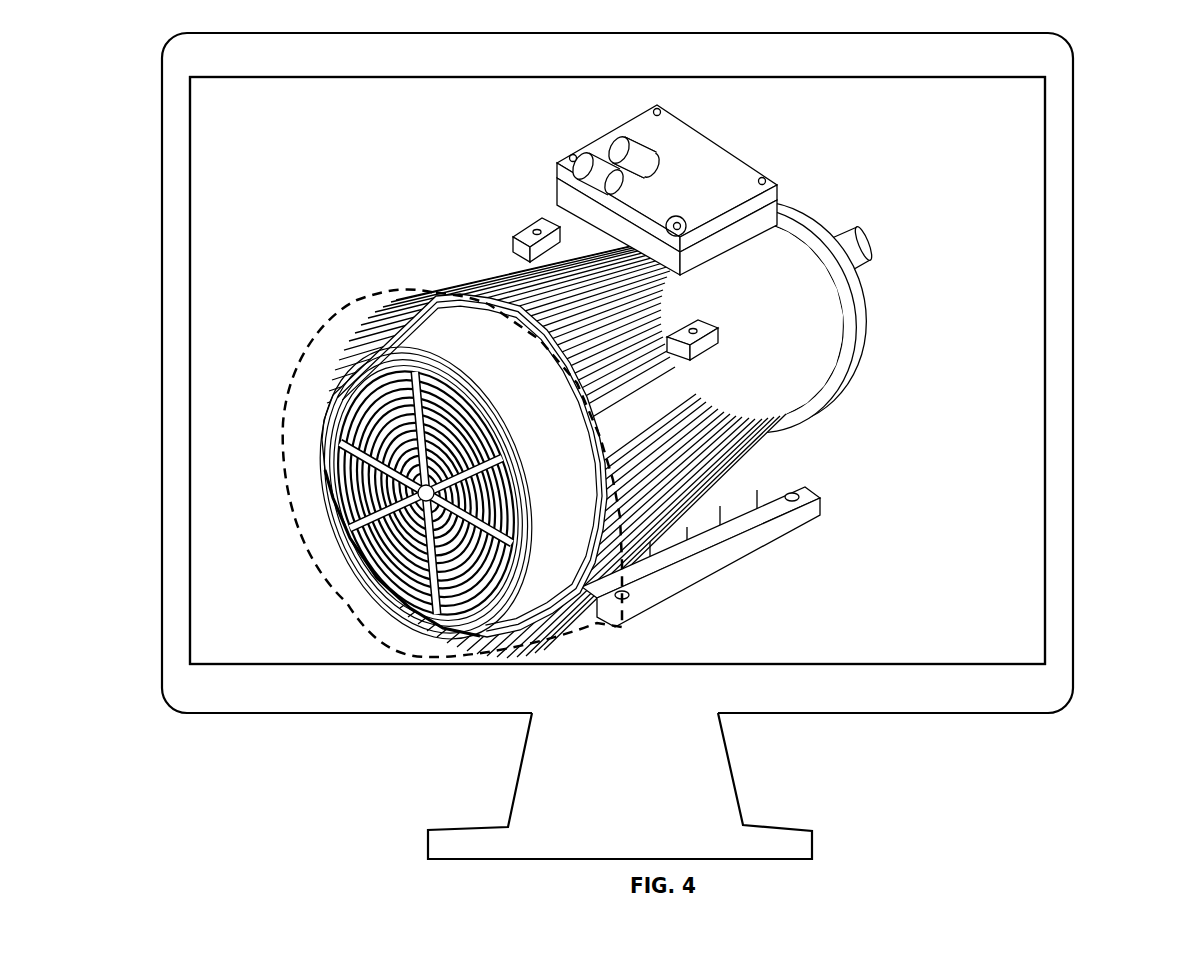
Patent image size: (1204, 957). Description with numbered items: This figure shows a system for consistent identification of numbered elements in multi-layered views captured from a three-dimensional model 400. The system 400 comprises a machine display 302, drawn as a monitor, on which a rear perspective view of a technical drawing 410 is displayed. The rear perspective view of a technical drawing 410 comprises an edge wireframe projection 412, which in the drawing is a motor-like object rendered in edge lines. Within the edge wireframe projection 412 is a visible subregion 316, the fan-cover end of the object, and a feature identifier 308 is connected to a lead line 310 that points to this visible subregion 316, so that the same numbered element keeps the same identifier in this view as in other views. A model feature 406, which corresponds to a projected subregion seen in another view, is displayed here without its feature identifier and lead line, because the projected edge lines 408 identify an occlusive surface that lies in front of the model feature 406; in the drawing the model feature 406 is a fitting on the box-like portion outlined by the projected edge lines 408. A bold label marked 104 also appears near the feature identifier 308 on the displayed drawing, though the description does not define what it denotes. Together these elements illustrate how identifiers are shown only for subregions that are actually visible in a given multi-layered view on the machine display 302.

The electric motor 104 is at (626, 385).
The machine display 302 is at (1074, 371).
The feature identifier 308 is at (603, 382).
The lead line 310 is at (403, 212).
The visible subregion 316 is at (360, 592).
The system for consistent identification of numbered elements in multi-layered views 400 is at (1105, 88).
The model feature 406 is at (618, 150).
The projected edge lines 408 is at (656, 189).
The rear perspective view of a technical drawing 410 is at (978, 614).
The edge wireframe projection 412 is at (905, 372).